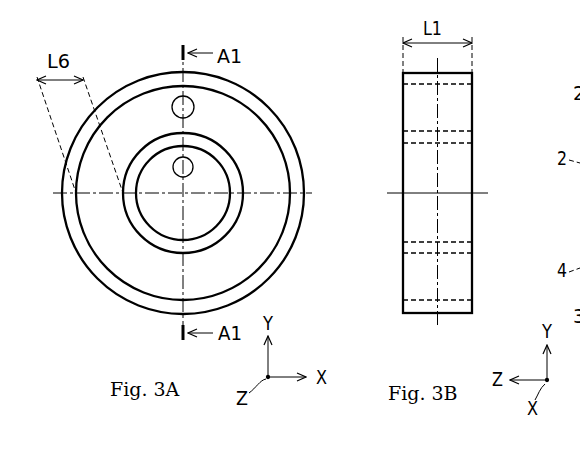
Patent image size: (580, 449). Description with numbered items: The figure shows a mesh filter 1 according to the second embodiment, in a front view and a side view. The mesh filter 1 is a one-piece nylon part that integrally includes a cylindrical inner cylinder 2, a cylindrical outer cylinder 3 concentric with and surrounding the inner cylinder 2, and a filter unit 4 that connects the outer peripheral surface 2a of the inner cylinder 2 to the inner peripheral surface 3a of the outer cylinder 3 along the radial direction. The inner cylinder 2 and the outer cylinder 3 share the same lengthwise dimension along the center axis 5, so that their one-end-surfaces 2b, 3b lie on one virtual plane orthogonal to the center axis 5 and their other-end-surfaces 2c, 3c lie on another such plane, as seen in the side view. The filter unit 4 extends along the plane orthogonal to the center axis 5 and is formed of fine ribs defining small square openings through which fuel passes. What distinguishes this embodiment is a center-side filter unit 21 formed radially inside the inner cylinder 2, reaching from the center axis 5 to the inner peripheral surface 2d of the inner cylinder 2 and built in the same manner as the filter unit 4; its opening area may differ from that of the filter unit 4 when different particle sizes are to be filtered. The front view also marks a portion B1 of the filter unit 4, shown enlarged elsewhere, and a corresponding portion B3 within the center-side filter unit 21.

In FIG. 3A, the mesh filter 1 is at (184, 175).
In FIG. 3B, the mesh filter 1 is at (443, 183).
In FIG. 3A, the inner cylinder 2 is at (222, 151).
In FIG. 3B, the inner cylinder 2 is at (444, 197).
In FIG. 3A, the outer peripheral surface of the inner cylinder 2a is at (233, 228).
In FIG. 3B, the outer peripheral surface of the inner cylinder 2a is at (458, 130).
In FIG. 3B, the one-end-surface of the inner cylinder 2b is at (474, 248).
In FIG. 3A, the other-end-surface of the inner cylinder 2c is at (170, 254).
In FIG. 3B, the other-end-surface of the inner cylinder 2c is at (402, 249).
In FIG. 3A, the inner peripheral surface of the inner cylinder 2d is at (228, 171).
In FIG. 3B, the inner peripheral surface of the inner cylinder 2d is at (452, 146).
In FIG. 3A, the outer cylinder 3 is at (300, 149).
In FIG. 3B, the outer cylinder 3 is at (401, 72).
In FIG. 3A, the inner peripheral surface of the outer cylinder 3a is at (288, 212).
In FIG. 3B, the inner peripheral surface of the outer cylinder 3a is at (458, 87).
In FIG. 3B, the one-end-surface of the outer cylinder 3b is at (474, 300).
In FIG. 3A, the other-end-surface of the outer cylinder 3c is at (126, 296).
In FIG. 3B, the other-end-surface of the outer cylinder 3c is at (402, 302).
In FIG. 3A, the filter unit 4 is at (212, 70).
In FIG. 3B, the filter unit 4 is at (433, 113).
In FIG. 3A, the center axis 5 is at (182, 195).
In FIG. 3B, the center axis 5 is at (398, 194).
In FIG. 3A, the center-side filter unit 21 is at (142, 201).
In FIG. 3B, the center-side filter unit 21 is at (440, 215).
In FIG. 3A, the portion B1 is at (176, 96).
In FIG. 3A, the portion B3 is at (176, 158).